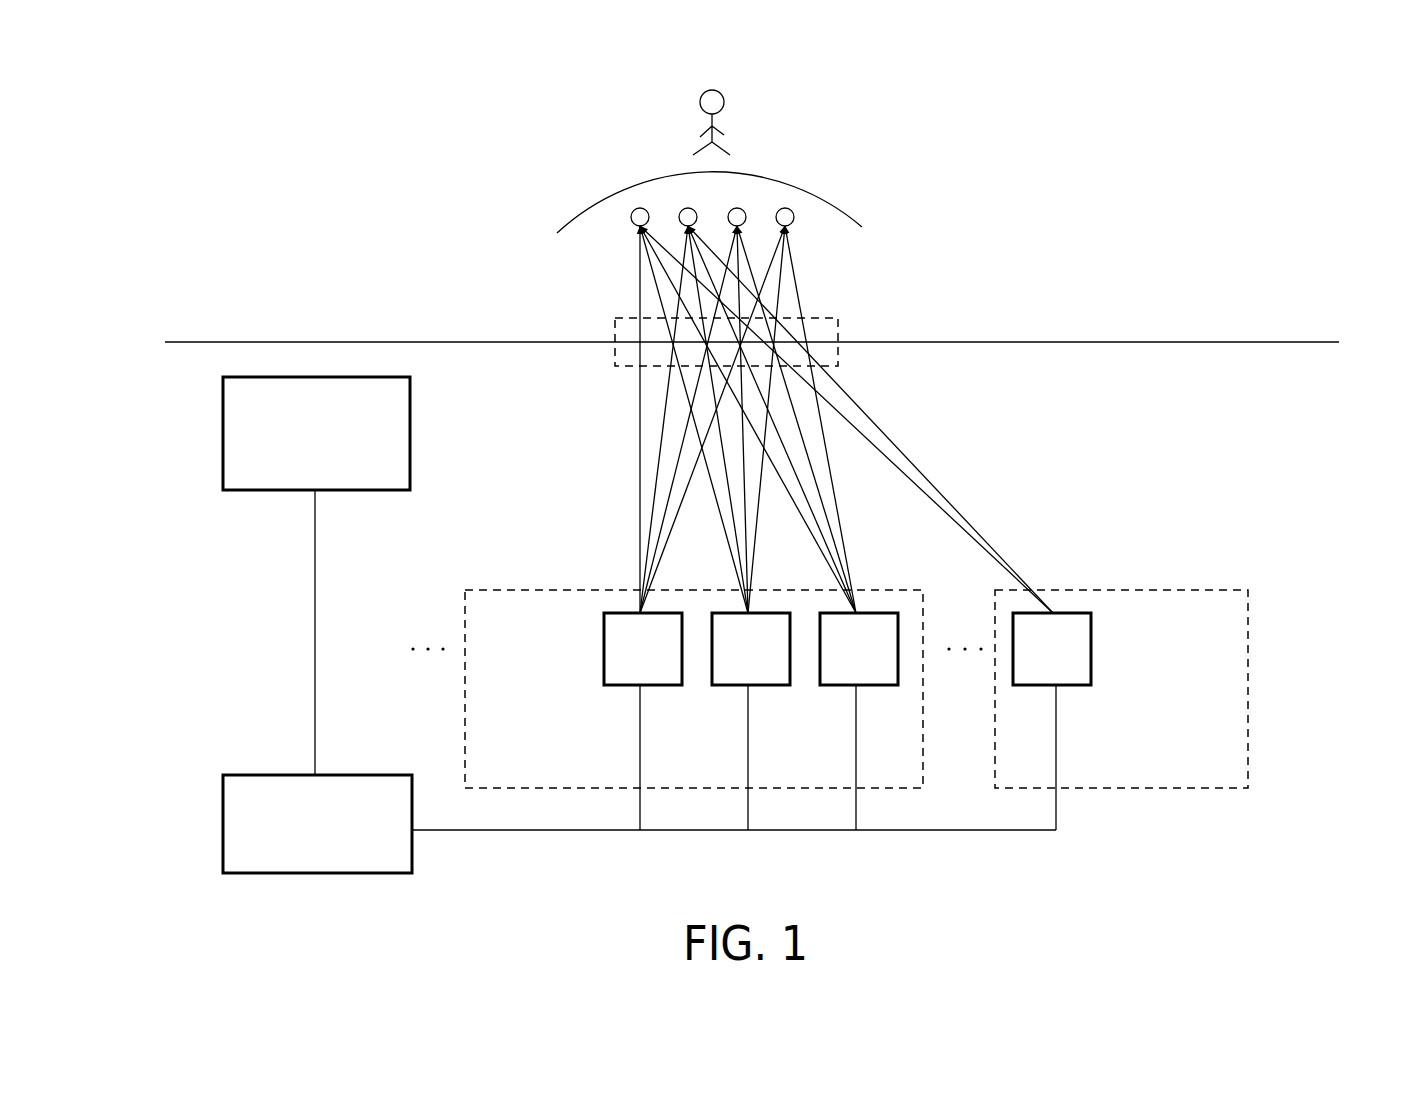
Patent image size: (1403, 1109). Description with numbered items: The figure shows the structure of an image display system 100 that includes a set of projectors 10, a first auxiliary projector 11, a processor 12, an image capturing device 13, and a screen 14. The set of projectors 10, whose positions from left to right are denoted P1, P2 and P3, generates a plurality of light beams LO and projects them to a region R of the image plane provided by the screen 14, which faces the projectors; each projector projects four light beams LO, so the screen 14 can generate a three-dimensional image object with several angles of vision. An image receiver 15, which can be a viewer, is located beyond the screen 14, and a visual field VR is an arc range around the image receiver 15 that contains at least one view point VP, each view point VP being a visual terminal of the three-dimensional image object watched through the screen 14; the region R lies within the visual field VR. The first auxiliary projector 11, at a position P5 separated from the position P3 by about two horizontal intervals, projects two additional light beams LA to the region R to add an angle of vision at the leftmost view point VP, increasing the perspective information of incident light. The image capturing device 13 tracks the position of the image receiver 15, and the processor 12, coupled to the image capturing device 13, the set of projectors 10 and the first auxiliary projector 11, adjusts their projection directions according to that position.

The image display system 100 is at (296, 190).
The set of projectors 10 is at (694, 729).
The first auxiliary projector 11 is at (1121, 730).
The processor 12 is at (324, 873).
The image capturing device 13 is at (373, 492).
The screen 14 is at (1205, 342).
The image receiver 15 is at (725, 102).
The visual field VR is at (852, 217).
The view point VP is at (633, 223).
The region R is at (840, 363).
The light beam LO is at (640, 457).
The additional light beam LA is at (923, 470).
The position P1 is at (652, 687).
The position P2 is at (760, 687).
The position P3 is at (868, 687).
The position P5 is at (1058, 687).